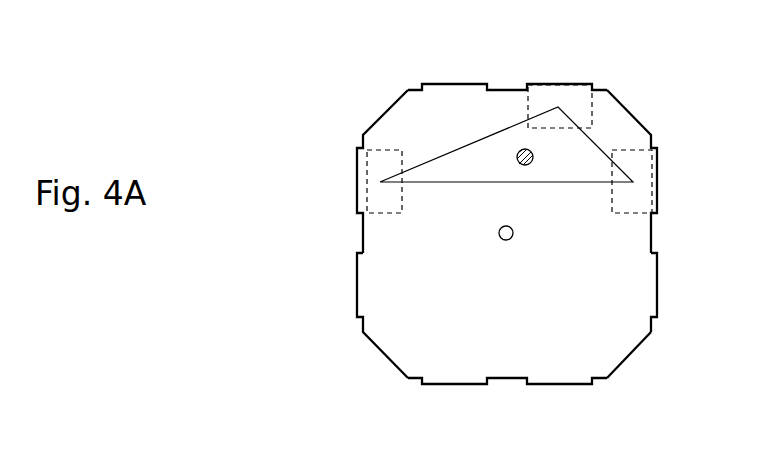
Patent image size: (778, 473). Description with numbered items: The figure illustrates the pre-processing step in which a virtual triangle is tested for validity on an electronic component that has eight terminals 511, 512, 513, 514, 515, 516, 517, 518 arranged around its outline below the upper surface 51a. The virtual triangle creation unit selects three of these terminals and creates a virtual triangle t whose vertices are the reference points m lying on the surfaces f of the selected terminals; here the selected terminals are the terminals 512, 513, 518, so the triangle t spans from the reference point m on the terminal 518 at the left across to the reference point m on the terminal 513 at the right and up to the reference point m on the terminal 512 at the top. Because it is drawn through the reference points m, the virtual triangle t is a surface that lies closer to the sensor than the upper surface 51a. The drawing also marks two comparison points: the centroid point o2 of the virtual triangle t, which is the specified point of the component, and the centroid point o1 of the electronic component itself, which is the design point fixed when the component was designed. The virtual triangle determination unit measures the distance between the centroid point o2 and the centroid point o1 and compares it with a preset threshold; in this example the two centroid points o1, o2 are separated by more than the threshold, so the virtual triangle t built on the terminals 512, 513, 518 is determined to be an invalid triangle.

The terminal 511 is at (454, 83).
The terminal 512 is at (560, 83).
The terminal 513 is at (657, 182).
The terminal 514 is at (657, 285).
The terminal 515 is at (558, 385).
The terminal 516 is at (453, 385).
The terminal 517 is at (358, 284).
The terminal 518 is at (358, 178).
The upper surface 51a is at (622, 345).
The virtual triangle t is at (440, 158).
The reference point m is at (380, 182).
The centroid point of the electronic component o1 is at (513, 232).
The centroid point of the virtual triangle o2 is at (533, 150).
The surface f is at (367, 197).